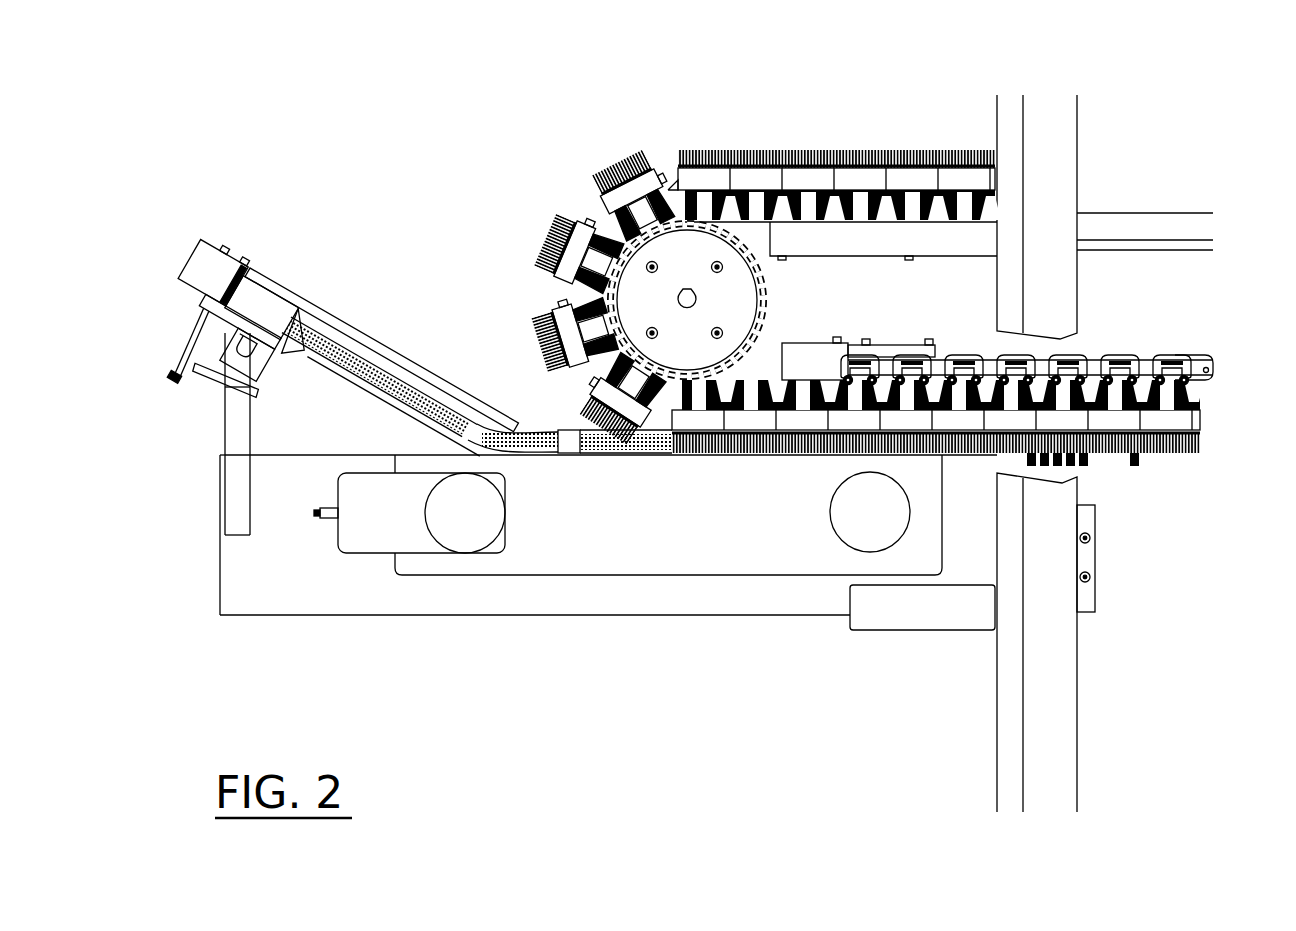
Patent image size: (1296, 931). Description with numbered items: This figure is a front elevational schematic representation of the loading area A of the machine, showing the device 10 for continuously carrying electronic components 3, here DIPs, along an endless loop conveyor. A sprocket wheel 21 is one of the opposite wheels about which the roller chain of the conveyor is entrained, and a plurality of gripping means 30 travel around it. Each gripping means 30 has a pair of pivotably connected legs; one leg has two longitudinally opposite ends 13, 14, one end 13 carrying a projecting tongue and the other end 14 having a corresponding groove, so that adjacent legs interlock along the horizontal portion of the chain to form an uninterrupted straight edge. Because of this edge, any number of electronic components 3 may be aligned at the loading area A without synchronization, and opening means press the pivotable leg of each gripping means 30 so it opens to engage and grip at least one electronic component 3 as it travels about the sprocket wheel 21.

The loading area A is at (296, 128).
The electronic components 3 is at (1076, 465).
The device 10 is at (845, 105).
The end of the one leg 13 is at (548, 253).
The end of the one leg 14 is at (583, 226).
The sprocket wheel 21 is at (742, 302).
The gripping means 30 is at (705, 140).